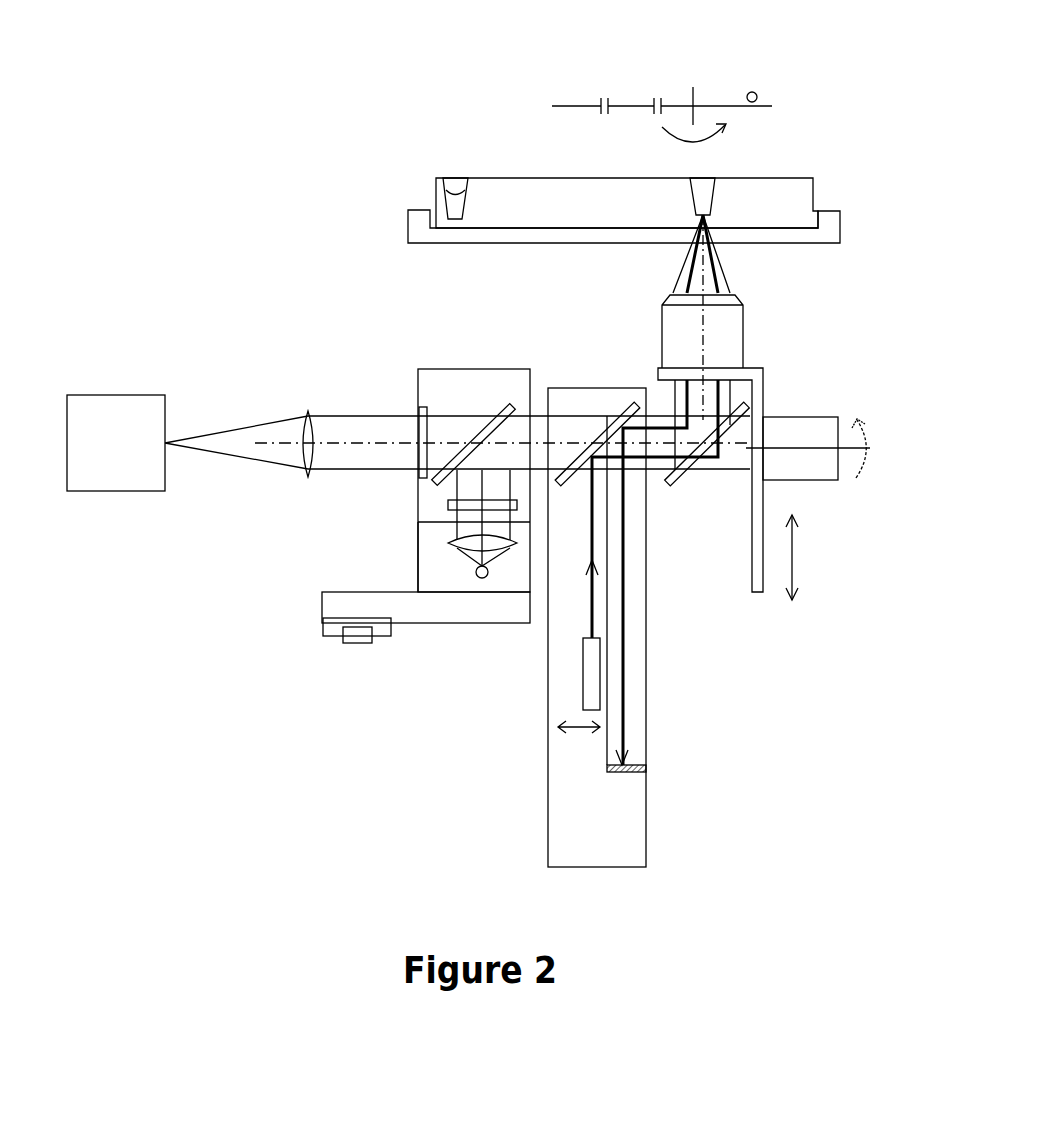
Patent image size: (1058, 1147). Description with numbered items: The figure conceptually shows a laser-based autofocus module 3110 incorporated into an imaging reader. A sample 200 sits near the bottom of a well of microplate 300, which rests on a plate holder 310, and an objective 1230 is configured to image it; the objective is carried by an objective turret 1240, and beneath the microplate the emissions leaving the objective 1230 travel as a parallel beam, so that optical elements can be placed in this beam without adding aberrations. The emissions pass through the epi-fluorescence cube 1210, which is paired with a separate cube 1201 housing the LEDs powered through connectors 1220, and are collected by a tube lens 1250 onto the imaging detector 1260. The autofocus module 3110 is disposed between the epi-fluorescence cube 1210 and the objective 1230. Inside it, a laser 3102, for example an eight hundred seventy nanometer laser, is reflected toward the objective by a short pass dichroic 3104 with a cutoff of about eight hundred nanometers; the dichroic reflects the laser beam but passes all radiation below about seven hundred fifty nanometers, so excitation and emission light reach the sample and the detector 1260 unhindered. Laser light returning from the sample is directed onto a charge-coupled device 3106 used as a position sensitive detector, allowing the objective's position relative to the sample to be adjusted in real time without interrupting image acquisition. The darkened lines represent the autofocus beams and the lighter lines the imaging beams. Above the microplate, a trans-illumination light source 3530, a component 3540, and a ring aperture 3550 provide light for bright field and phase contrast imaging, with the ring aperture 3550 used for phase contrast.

The sample cup 200 is at (458, 195).
The microplate 300 is at (797, 178).
The plate holder 310 is at (841, 238).
The cube 1201 is at (417, 563).
The epi-fluorescence cube 1210 is at (455, 368).
The connector 1220 is at (686, 488).
The objective 1230 is at (745, 330).
The objective turret 1240 is at (768, 393).
The tube lens 1250 is at (307, 412).
The detector 1260 is at (130, 393).
The laser 3102 is at (583, 680).
The dichroic 3104 is at (623, 402).
The charge-coupled device (CCD) 3106 is at (626, 772).
The laser-based autofocus module 3110 is at (650, 850).
The light source 3530 is at (752, 91).
The rotating arm 3540 is at (770, 104).
The ring aperture 3550 is at (632, 90).